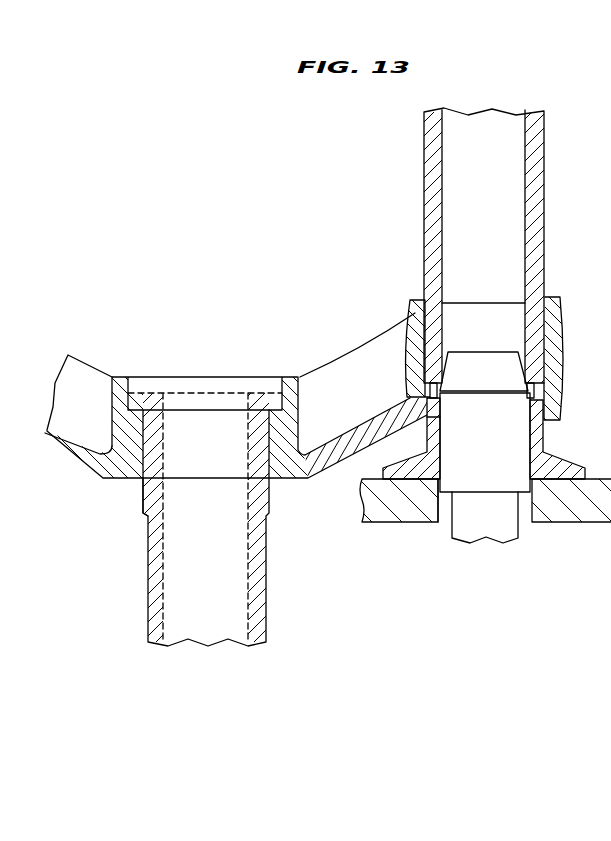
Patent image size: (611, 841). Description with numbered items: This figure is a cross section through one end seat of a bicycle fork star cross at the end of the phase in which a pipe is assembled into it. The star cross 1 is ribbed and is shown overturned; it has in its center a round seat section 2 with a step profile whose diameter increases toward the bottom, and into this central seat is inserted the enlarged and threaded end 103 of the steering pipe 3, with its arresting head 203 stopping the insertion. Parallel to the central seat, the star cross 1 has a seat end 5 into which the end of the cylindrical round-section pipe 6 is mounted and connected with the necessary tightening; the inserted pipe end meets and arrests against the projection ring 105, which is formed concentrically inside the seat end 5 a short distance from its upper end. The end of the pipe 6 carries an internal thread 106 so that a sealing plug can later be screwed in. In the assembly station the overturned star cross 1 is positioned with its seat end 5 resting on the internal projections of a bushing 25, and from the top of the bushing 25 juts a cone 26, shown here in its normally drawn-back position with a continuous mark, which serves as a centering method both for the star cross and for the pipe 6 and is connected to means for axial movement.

The star cross 1 is at (98, 350).
The round seat section 2 is at (275, 437).
The steering pipe 3 is at (278, 607).
The enlarged and threaded end 103 is at (143, 496).
The arresting head 203 is at (262, 393).
The seat end 5 is at (418, 332).
The pipe 6 is at (410, 165).
The internal thread 106 is at (517, 327).
The projection ring 105 is at (412, 387).
The bushing 25 is at (544, 449).
The cone 26 is at (481, 478).